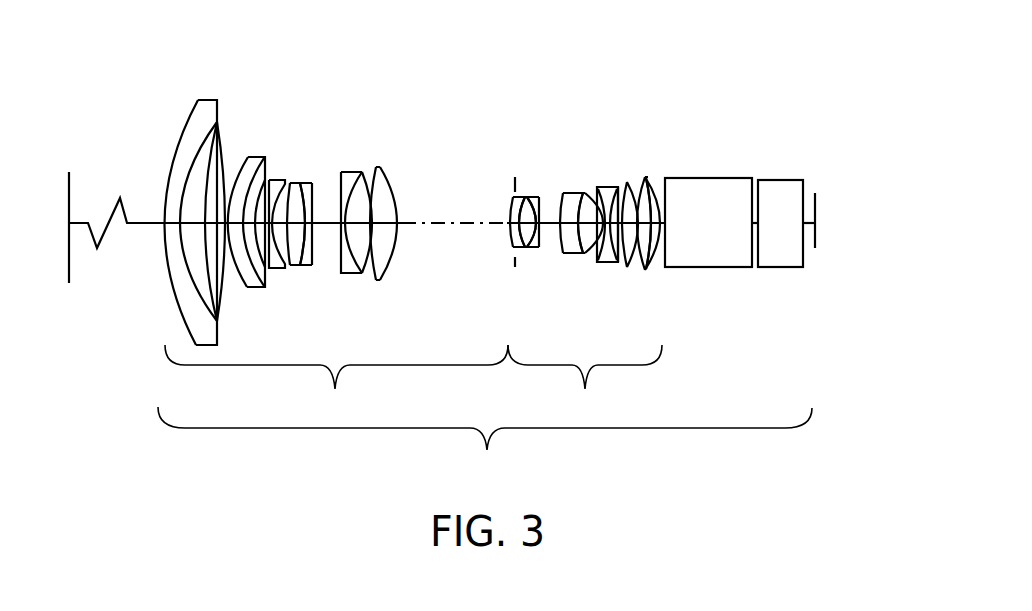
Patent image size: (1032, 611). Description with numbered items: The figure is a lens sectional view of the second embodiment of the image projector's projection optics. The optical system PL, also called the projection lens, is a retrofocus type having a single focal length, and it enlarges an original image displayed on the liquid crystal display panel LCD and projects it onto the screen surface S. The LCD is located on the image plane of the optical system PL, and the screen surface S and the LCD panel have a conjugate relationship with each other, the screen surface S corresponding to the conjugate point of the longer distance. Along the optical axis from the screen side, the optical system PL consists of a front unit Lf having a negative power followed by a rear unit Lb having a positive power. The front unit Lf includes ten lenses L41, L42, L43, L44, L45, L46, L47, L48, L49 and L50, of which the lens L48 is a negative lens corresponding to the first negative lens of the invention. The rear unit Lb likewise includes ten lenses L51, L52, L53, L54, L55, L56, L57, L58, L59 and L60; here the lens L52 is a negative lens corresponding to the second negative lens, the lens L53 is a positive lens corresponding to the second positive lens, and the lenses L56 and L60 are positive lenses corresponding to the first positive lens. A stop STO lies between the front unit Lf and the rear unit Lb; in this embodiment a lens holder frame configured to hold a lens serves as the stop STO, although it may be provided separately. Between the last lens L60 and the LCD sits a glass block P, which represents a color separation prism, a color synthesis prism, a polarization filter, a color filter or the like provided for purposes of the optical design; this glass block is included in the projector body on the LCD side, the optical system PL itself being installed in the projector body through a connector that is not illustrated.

The screen surface S is at (70, 188).
The lens L41 is at (198, 123).
The lens L42 is at (220, 120).
The lens L43 is at (237, 157).
The lens L44 is at (257, 172).
The lens L45 is at (270, 178).
The lens L46 is at (295, 256).
The lens L47 is at (313, 262).
The negative lens L48 is at (348, 263).
The lens L49 is at (380, 278).
The lens L50 is at (382, 192).
The stop STO is at (515, 250).
The lens L51 is at (512, 205).
The negative lens L52 is at (527, 200).
The positive lens L53 is at (537, 202).
The lens L54 is at (558, 250).
The lens L55 is at (575, 247).
The positive lens L56 is at (598, 258).
The lens L57 is at (607, 190).
The lens L58 is at (623, 198).
The lens L59 is at (647, 178).
The positive lens L60 is at (653, 208).
The glass block P is at (775, 248).
The liquid crystal display panel LCD is at (815, 200).
The front unit Lf is at (336, 382).
The rear unit Lb is at (585, 382).
The optical system PL is at (485, 444).